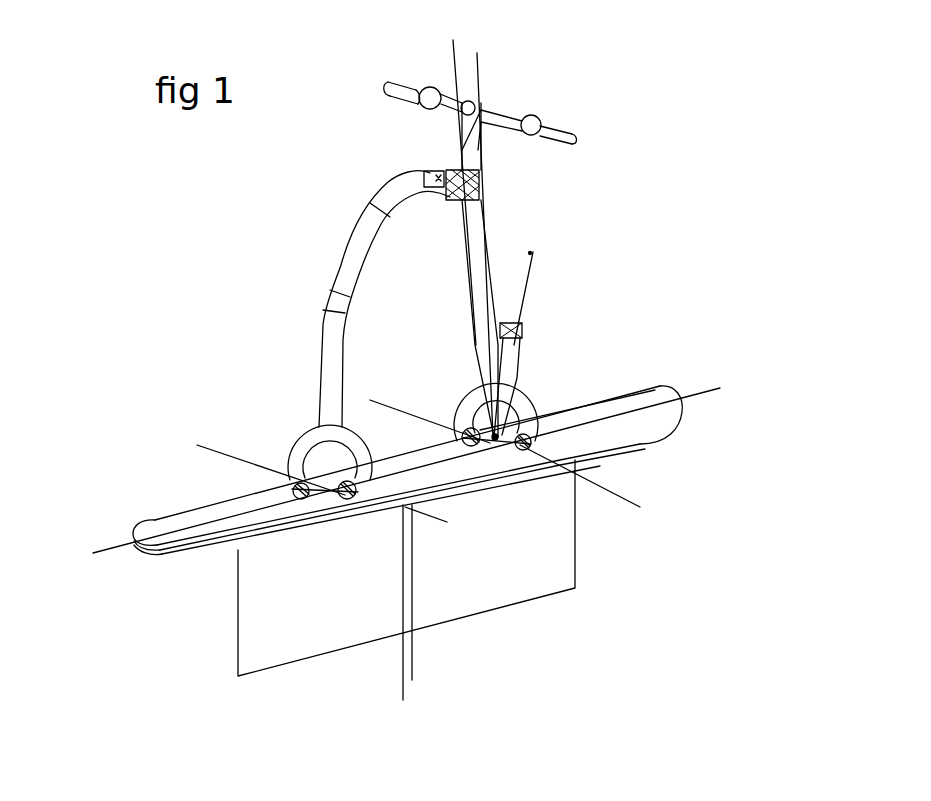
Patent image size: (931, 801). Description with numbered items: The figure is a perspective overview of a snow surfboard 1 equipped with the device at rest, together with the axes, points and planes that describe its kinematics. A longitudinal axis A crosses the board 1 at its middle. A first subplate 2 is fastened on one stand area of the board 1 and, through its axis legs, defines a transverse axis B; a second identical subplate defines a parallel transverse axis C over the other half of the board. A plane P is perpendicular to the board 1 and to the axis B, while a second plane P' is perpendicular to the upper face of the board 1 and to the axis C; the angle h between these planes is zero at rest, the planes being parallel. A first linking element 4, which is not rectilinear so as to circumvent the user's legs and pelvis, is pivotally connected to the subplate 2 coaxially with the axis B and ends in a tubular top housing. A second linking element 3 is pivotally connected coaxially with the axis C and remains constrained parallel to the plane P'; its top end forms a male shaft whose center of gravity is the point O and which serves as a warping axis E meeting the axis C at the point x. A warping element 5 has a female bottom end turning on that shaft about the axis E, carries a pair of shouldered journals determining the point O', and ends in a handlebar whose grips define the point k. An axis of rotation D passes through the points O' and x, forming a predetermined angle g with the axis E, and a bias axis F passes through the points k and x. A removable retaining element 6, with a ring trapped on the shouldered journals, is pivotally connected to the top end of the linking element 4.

The snow surfboard 1 is at (223, 541).
The first subplate 2 is at (290, 490).
The second linking element 3 is at (523, 392).
The first linking element 4 is at (323, 330).
The warping element 5 is at (480, 232).
The removable retaining element 6 is at (455, 207).
The longitudinal axis A is at (107, 547).
The transverse axis B is at (230, 452).
The transverse axis C is at (410, 408).
The axis of rotation D is at (452, 40).
The warping axis E is at (535, 252).
The bias axis F is at (478, 53).
The angle g is at (530, 253).
The angle h is at (418, 672).
The point k is at (478, 107).
The point O is at (645, 291).
The point O' is at (392, 160).
The plane P is at (406, 568).
The plane P' is at (580, 517).
The point x is at (455, 420).